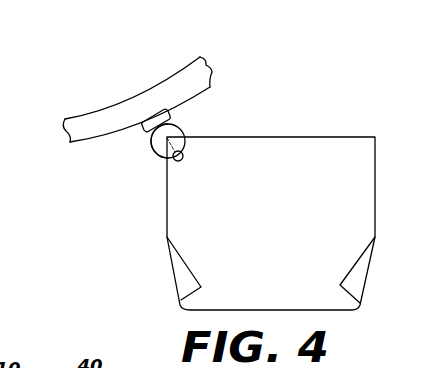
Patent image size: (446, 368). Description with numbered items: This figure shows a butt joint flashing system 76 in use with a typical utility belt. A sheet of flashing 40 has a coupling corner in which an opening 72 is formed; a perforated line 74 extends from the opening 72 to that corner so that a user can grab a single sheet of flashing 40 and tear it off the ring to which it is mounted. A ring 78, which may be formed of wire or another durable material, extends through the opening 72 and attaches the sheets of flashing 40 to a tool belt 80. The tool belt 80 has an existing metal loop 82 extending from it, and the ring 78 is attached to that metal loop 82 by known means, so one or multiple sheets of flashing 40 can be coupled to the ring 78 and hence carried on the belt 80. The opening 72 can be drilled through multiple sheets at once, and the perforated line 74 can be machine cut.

The flashing 40 is at (346, 130).
The opening 72 is at (168, 163).
The perforated line 74 is at (182, 135).
The butt joint flashing system 76 is at (300, 97).
The ring 78 is at (152, 138).
The tool belt 80 is at (183, 66).
The metal loop 82 is at (150, 111).